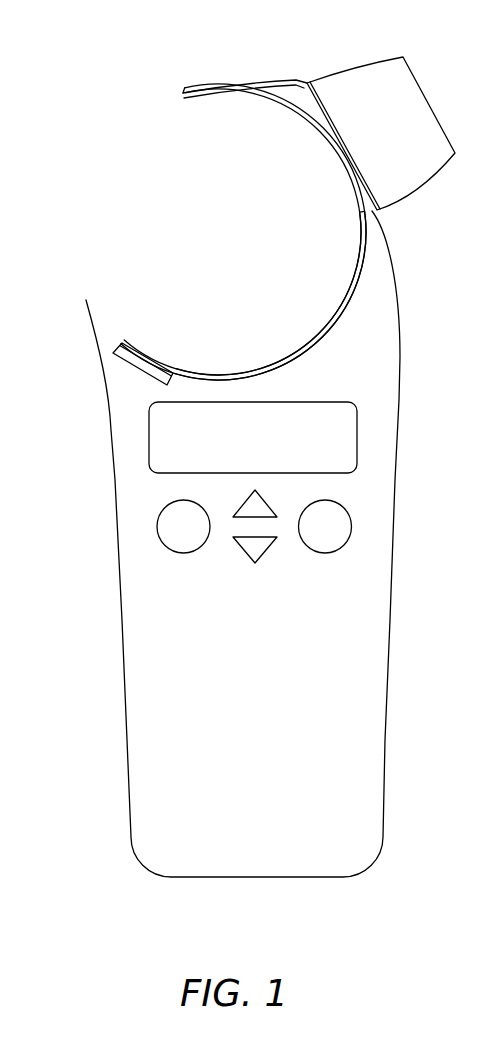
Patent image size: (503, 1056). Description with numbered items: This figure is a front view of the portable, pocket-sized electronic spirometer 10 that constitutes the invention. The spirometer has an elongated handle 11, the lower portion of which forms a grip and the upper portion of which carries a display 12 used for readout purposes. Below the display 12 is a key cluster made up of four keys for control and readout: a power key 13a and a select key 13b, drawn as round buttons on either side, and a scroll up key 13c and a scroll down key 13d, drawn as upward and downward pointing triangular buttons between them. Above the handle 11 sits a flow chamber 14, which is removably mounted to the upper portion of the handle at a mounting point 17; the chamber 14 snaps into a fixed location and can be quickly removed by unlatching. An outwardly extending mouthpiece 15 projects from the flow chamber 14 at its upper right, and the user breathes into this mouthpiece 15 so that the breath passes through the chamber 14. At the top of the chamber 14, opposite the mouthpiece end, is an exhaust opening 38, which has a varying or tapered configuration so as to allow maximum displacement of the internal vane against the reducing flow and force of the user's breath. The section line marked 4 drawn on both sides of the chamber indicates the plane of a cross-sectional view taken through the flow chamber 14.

The section line for FIG. 4 is at (48, 223).
The electronic spirometer 10 is at (80, 337).
The elongated handle 11 is at (160, 687).
The display 12 is at (340, 428).
The power key 13a is at (176, 530).
The select key 13b is at (327, 527).
The scroll up key 13c is at (256, 512).
The scroll down key 13d is at (262, 543).
The flow chamber 14 is at (162, 118).
The mouthpiece 15 is at (377, 78).
The mounting point 17 is at (333, 341).
The exhaust opening 38 is at (235, 84).